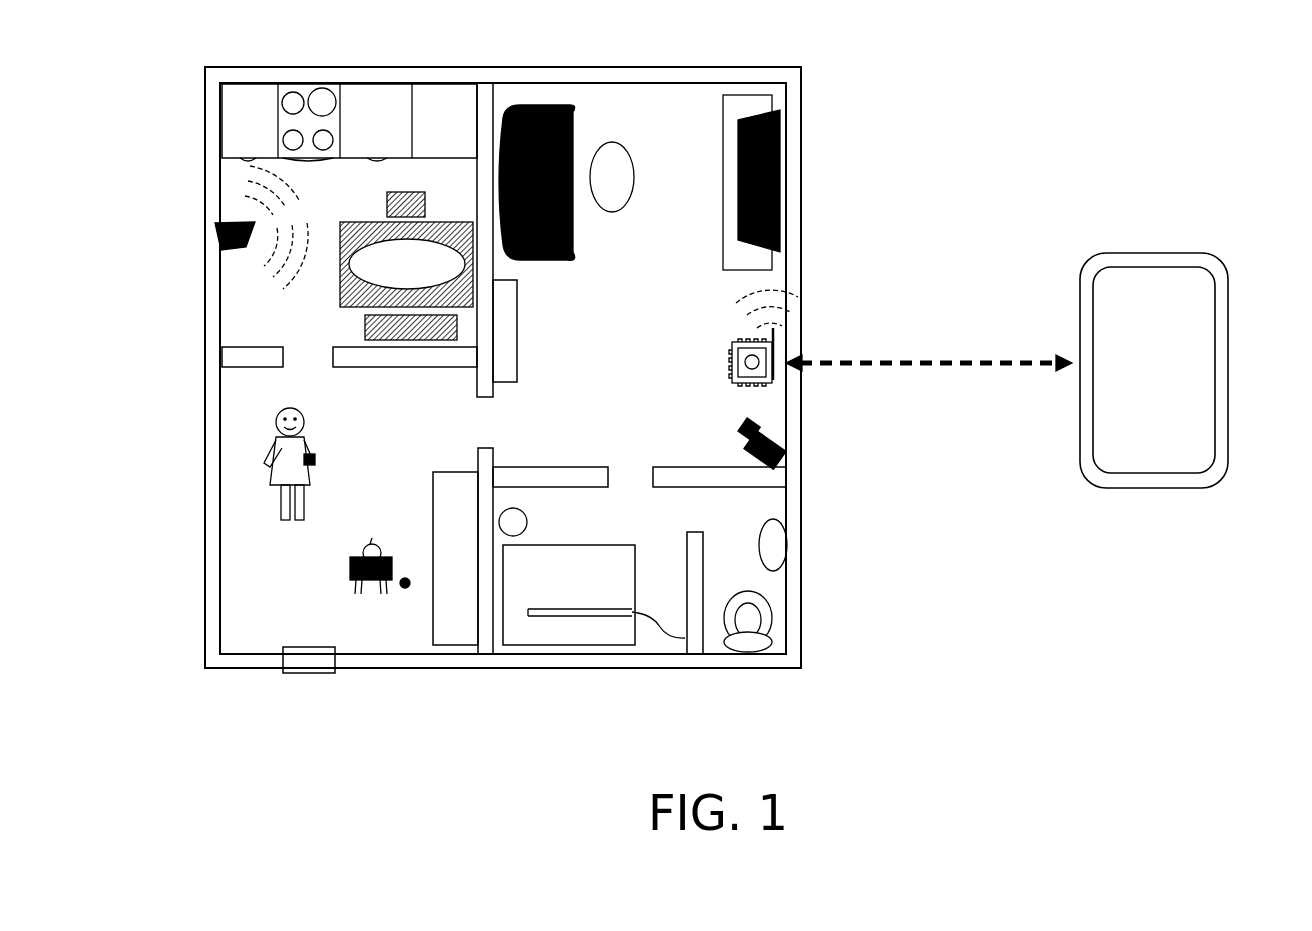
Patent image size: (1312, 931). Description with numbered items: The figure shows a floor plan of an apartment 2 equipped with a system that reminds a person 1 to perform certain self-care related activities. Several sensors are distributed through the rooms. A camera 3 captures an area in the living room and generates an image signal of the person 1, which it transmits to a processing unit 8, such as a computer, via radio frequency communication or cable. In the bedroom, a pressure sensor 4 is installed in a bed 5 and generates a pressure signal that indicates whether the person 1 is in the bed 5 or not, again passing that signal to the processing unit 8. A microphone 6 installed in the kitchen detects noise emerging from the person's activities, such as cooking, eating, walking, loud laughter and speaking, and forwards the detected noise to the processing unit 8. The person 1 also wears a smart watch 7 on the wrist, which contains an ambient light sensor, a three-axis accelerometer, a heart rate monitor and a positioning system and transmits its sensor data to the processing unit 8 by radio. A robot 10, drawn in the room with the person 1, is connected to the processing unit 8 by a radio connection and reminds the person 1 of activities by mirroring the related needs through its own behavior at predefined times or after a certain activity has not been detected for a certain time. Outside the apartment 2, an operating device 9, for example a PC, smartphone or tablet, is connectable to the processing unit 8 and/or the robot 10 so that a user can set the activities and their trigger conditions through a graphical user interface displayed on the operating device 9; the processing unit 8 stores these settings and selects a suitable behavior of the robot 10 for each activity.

The person 1 is at (306, 440).
The apartment 2 is at (795, 95).
The camera 3 is at (737, 438).
The pressure sensor 4 is at (622, 612).
The bed 5 is at (593, 545).
The microphone 6 is at (215, 235).
The smart watch 7 is at (316, 460).
The processing unit 8 is at (730, 363).
The operating device 9 is at (1228, 363).
The robot 10 is at (350, 575).